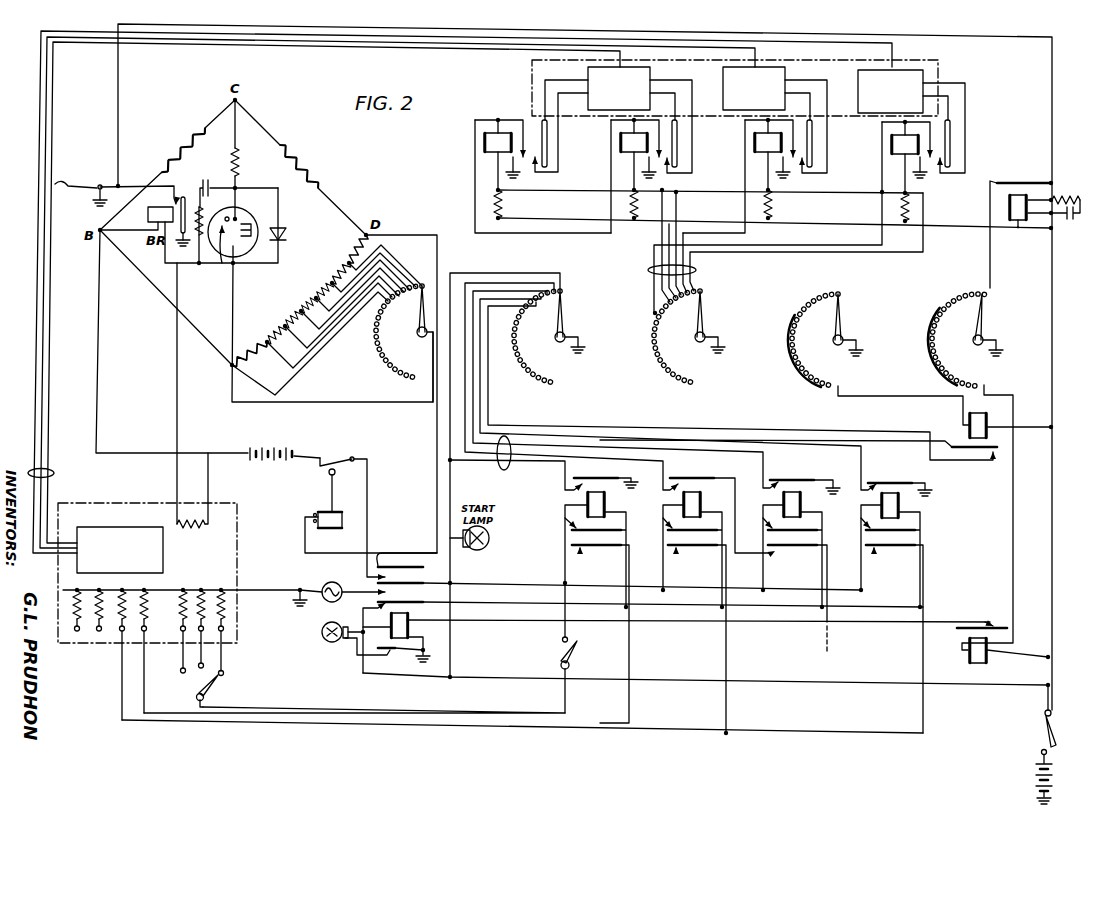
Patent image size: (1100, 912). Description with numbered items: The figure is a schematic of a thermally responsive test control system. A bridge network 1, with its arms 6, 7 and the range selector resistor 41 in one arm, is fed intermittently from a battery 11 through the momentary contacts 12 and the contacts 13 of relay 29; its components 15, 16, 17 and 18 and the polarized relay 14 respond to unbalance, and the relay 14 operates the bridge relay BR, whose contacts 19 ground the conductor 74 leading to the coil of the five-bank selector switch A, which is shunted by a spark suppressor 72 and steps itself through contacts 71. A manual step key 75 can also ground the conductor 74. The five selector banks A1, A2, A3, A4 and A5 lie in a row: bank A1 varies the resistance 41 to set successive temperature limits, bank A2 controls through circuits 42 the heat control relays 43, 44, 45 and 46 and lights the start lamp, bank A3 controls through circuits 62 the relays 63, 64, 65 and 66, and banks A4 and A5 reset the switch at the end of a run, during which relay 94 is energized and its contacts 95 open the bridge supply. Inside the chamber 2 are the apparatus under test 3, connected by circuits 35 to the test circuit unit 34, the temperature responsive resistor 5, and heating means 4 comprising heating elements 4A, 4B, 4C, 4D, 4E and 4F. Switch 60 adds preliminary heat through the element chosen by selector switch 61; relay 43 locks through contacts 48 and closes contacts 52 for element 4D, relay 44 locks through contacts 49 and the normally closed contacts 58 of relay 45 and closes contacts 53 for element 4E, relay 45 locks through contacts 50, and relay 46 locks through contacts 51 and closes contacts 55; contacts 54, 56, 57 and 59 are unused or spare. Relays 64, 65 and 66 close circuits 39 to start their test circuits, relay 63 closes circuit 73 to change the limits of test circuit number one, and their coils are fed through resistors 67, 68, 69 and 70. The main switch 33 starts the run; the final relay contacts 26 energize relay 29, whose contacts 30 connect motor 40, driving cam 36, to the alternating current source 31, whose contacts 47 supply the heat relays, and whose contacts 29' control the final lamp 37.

The bridge circuit 1 is at (268, 398).
The chamber 2 is at (237, 526).
The apparatus under test 3 is at (110, 527).
The heating means 4 is at (181, 582).
The heating element 4A is at (225, 603).
The heating element 4B is at (223, 631).
The heating element 4C is at (181, 626).
The heating element 4D is at (144, 624).
The heating element 4E is at (122, 622).
The heating element 4F is at (85, 624).
The temperature responsive resistor 5 is at (196, 530).
The bridge resistor 6 is at (192, 138).
The bridge resistor 7 is at (308, 163).
The power source 11 is at (254, 448).
The momentary contacts 12 is at (327, 462).
The contacts of relay 29 13 is at (378, 560).
The polarized relay 14 is at (251, 251).
The resistor 15 is at (243, 170).
The rectifier 16 is at (288, 234).
The cathode lead 17 is at (216, 254).
The capacitor 18 is at (239, 184).
The contacts of bridge relay 19 is at (182, 195).
The final relay contacts 26 is at (1010, 631).
The relay 29 is at (404, 637).
The contacts of relay 29 29' is at (400, 662).
The contacts of relay 29 30 is at (370, 582).
The alternating current source 31 is at (329, 582).
The switch 33 is at (1040, 745).
The test circuit unit 34 is at (940, 70).
The circuits 35 is at (460, 292).
The cam 36 is at (336, 473).
The final lamp 37 is at (321, 632).
The circuit 39 is at (679, 124).
The motor 40 is at (318, 512).
The adjustable resistor 41 is at (322, 277).
The circuits 42 is at (497, 462).
The relay 43 is at (606, 503).
The relay 44 is at (702, 503).
The relay 45 is at (802, 503).
The relay 46 is at (900, 503).
The contacts of relay 29 47 is at (366, 606).
The contacts of relay 43 48 is at (566, 484).
The contacts of relay 44 49 is at (664, 480).
The contacts of relay 45 50 is at (764, 482).
The contacts of relay 46 51 is at (862, 484).
The contacts of relay 43 52 is at (565, 522).
The contacts of relay 44 53 is at (668, 520).
The contacts of relay 45 54 is at (768, 520).
The contacts of relay 46 55 is at (866, 520).
The contacts of relay 43 56 is at (588, 546).
The contacts of relay 44 57 is at (684, 546).
The normally closed contacts of relay 45 58 is at (784, 550).
The contacts of relay 46 59 is at (882, 546).
The switch 60 is at (578, 650).
The selector switch 61 is at (210, 690).
The circuits 62 is at (696, 268).
The relay 63 is at (485, 143).
The relay 64 is at (621, 143).
The relay 65 is at (755, 143).
The relay 66 is at (892, 145).
The resistor 67 is at (503, 206).
The resistor 68 is at (630, 208).
The resistor 69 is at (765, 208).
The resistor 70 is at (899, 210).
The contacts of the selector switch 71 is at (1005, 181).
The spark suppressor circuit 72 is at (1060, 230).
The circuit 73 is at (552, 123).
The conductor 74 is at (118, 80).
The manual step key 75 is at (74, 195).
The relay 94 is at (988, 418).
The contacts of relay 94 95 is at (996, 462).
The selector switch A is at (1016, 222).
The bridge relay BR is at (189, 226).
The selector bank A1 is at (403, 338).
The selector bank A2 is at (548, 338).
The selector bank A3 is at (688, 337).
The selector bank A4 is at (825, 344).
The selector bank A5 is at (966, 341).